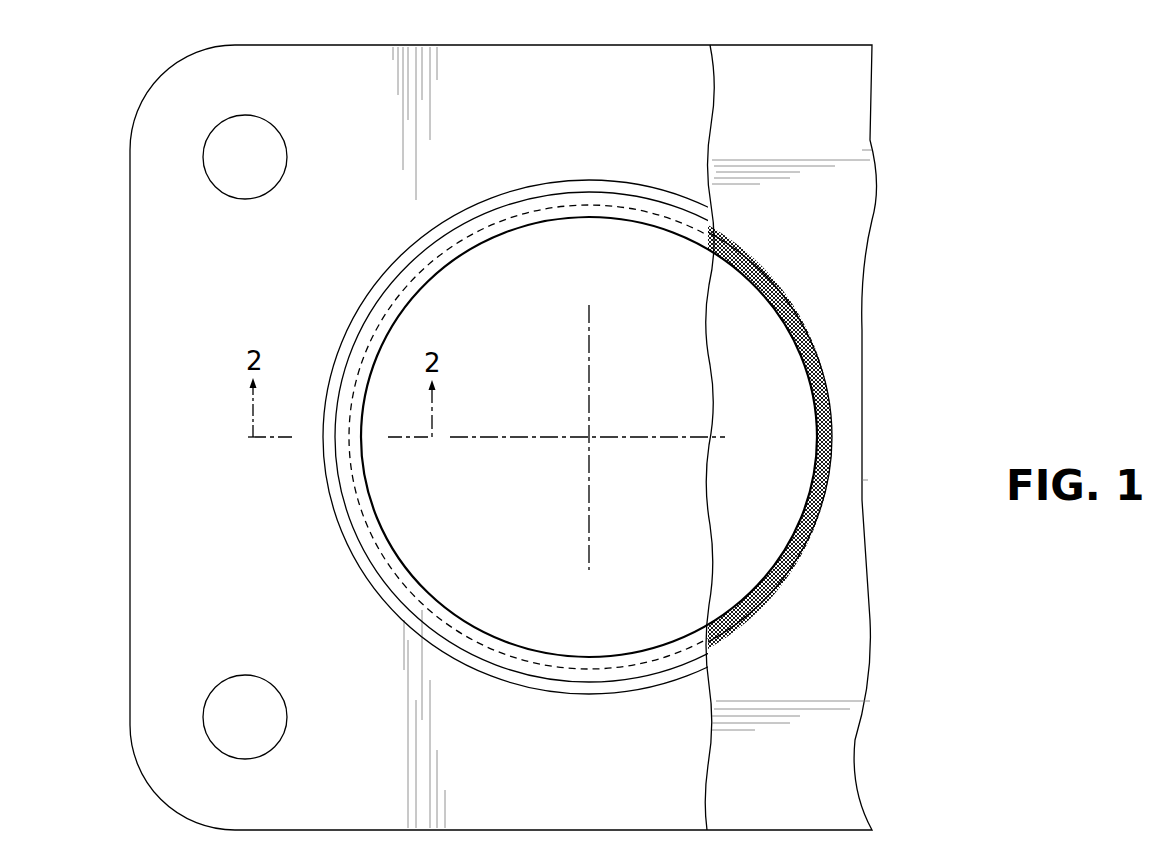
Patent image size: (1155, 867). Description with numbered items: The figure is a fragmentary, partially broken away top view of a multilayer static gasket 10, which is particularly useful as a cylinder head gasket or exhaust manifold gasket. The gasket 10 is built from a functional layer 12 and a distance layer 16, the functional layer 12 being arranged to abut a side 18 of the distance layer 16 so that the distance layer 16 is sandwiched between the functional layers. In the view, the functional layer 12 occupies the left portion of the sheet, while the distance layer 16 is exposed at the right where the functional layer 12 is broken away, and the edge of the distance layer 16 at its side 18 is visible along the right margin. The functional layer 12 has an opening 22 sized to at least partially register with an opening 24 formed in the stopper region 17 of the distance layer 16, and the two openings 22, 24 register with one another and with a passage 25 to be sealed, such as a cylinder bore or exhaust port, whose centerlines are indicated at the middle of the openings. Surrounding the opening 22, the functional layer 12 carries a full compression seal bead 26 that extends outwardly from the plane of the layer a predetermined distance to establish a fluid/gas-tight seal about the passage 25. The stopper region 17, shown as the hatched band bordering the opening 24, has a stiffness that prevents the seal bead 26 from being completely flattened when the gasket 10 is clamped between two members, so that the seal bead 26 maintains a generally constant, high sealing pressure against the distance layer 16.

The multilayer static gasket 10 is at (465, 36).
The functional layer 12 is at (336, 78).
The distance layer 16 is at (838, 68).
The stopper region 17 is at (774, 266).
The side of the distance layer 18 is at (900, 110).
The opening 22 is at (455, 258).
The opening 24 is at (589, 437).
The passage 25 is at (651, 389).
The full compression seal bead 26 is at (563, 187).